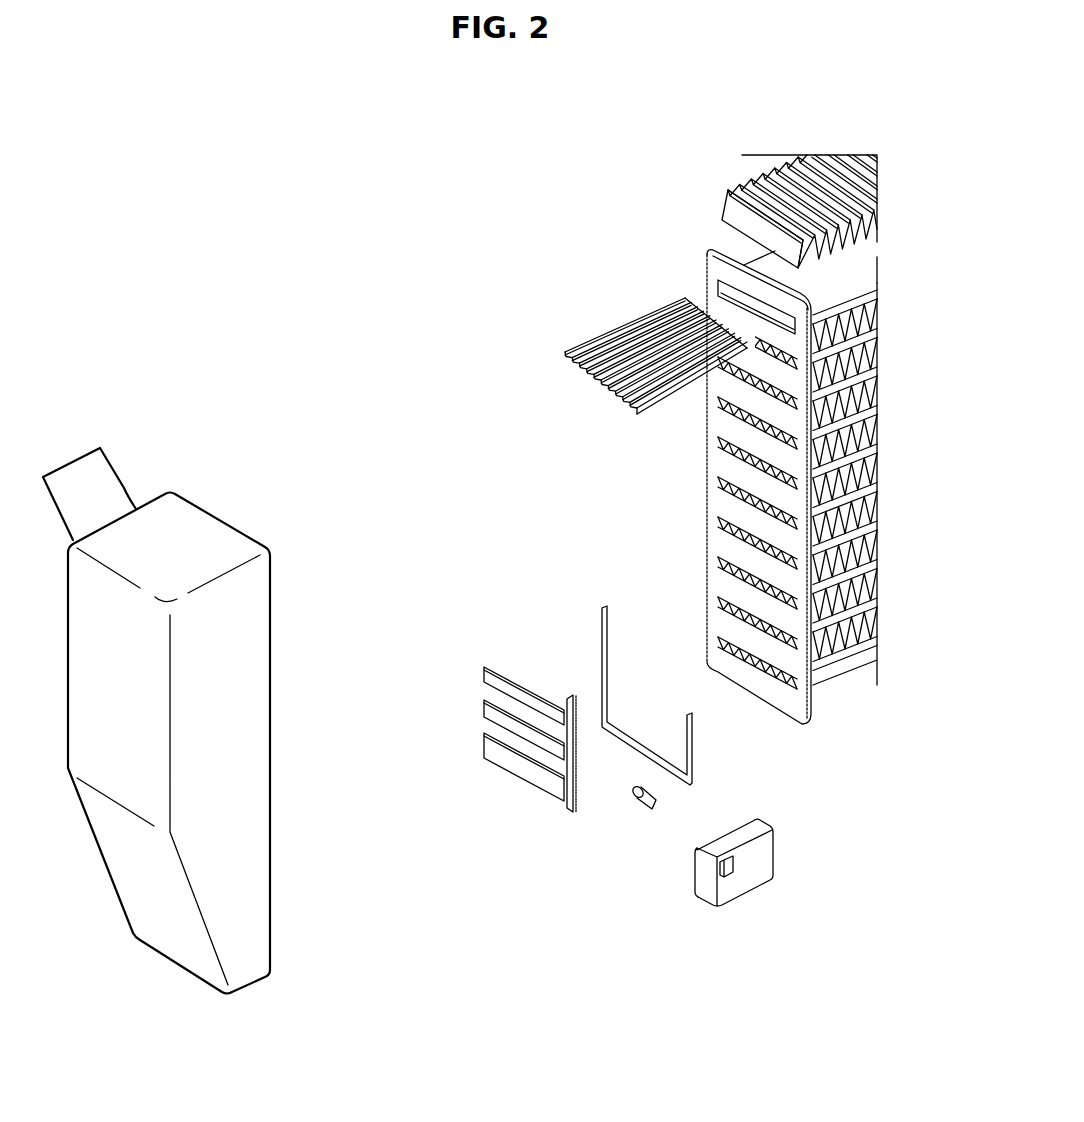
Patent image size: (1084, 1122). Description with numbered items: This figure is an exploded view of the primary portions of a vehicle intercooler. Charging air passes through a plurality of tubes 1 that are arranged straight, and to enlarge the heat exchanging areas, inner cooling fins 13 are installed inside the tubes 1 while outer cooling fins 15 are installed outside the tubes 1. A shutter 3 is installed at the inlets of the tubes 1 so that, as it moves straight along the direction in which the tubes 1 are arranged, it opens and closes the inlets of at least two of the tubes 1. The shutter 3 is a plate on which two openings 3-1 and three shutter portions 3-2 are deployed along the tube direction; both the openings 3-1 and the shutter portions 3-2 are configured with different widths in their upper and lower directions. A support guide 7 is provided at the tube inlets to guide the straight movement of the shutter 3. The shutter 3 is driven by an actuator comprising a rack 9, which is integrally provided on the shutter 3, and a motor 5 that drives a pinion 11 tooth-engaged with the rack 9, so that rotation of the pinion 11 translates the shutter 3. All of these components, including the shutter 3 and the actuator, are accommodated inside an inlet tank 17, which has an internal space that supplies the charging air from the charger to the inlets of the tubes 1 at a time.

The tubes 1 is at (872, 655).
The shutter 3 is at (475, 774).
The openings 3-1 is at (493, 730).
The shutter portions 3-2 is at (548, 712).
The motor 5 is at (758, 862).
The support guide 7 is at (692, 768).
The rack 9 is at (565, 700).
The pinion 11 is at (645, 798).
The inner cooling fins 13 is at (600, 347).
The outer cooling fins 15 is at (808, 182).
The inlet tank 17 is at (188, 517).